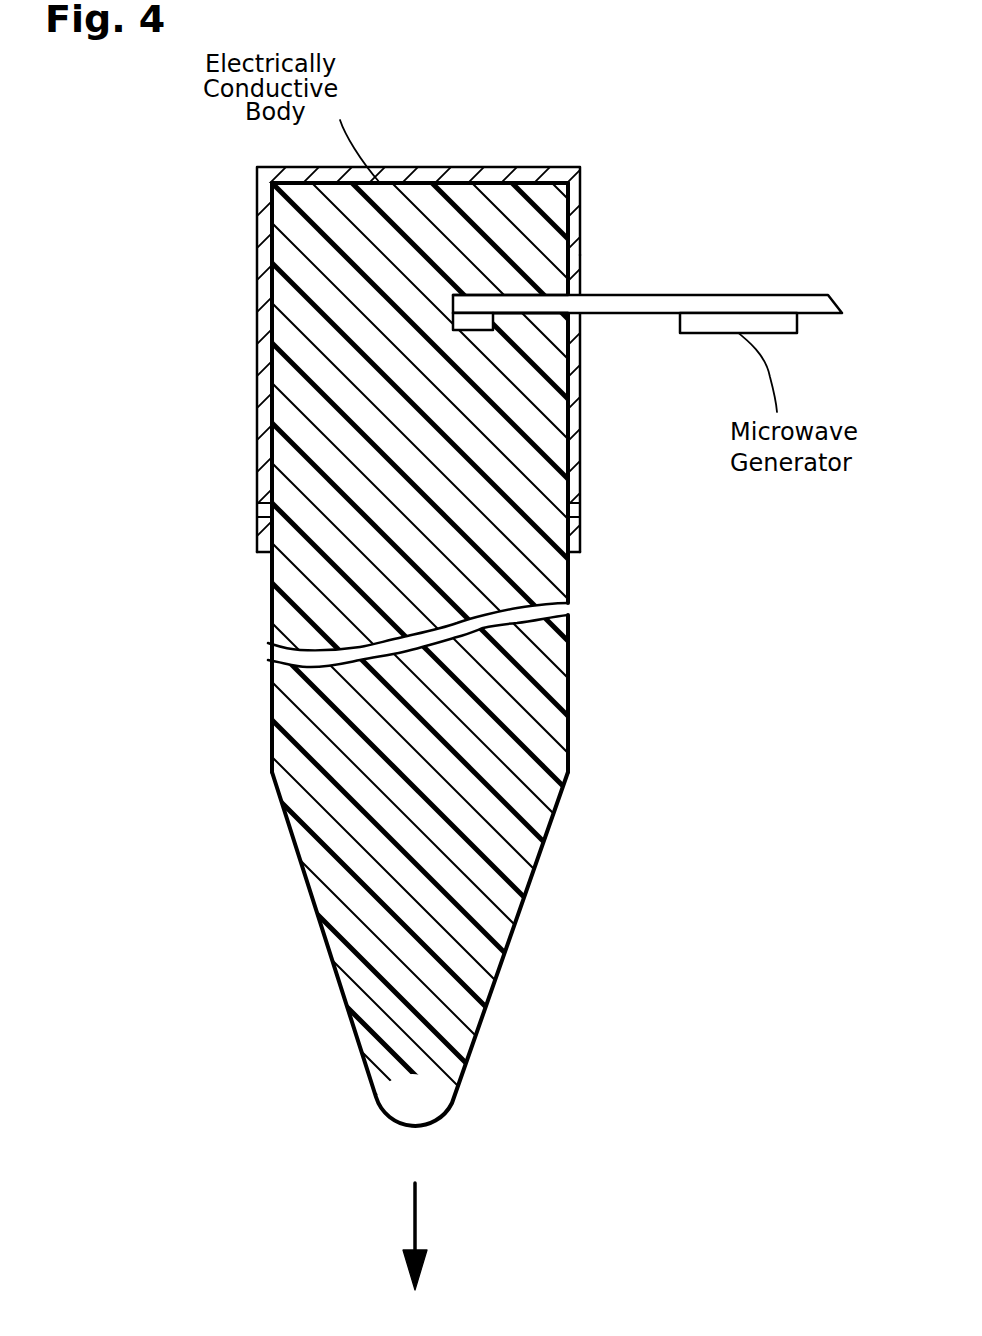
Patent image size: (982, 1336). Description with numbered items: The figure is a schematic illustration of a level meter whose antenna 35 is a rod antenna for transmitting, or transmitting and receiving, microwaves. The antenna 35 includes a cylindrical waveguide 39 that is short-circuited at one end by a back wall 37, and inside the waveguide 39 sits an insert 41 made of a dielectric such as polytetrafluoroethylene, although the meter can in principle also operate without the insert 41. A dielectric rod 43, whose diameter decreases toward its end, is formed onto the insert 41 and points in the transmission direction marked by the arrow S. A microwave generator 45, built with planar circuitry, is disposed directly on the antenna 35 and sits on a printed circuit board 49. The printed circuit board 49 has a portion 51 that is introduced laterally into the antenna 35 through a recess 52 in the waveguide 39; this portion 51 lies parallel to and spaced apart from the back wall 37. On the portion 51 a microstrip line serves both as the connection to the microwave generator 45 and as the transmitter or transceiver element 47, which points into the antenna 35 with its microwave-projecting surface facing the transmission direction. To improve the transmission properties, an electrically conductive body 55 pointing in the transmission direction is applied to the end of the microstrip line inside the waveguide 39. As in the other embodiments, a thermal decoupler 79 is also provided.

The antenna 35 is at (190, 244).
The back wall 37 is at (458, 177).
The cylindrical waveguide 39 is at (257, 405).
The insert 41 is at (505, 469).
The dielectric rod 43 is at (552, 845).
The microwave generator 45 is at (768, 325).
The transmitter or transceiver element 47 is at (505, 318).
The printed circuit board 49 is at (657, 303).
The portion 51 is at (517, 307).
The recess 52 is at (583, 275).
The electrically conductive body 55 is at (477, 315).
The thermal decoupler 79 is at (257, 508).
The transmission direction S is at (418, 1212).